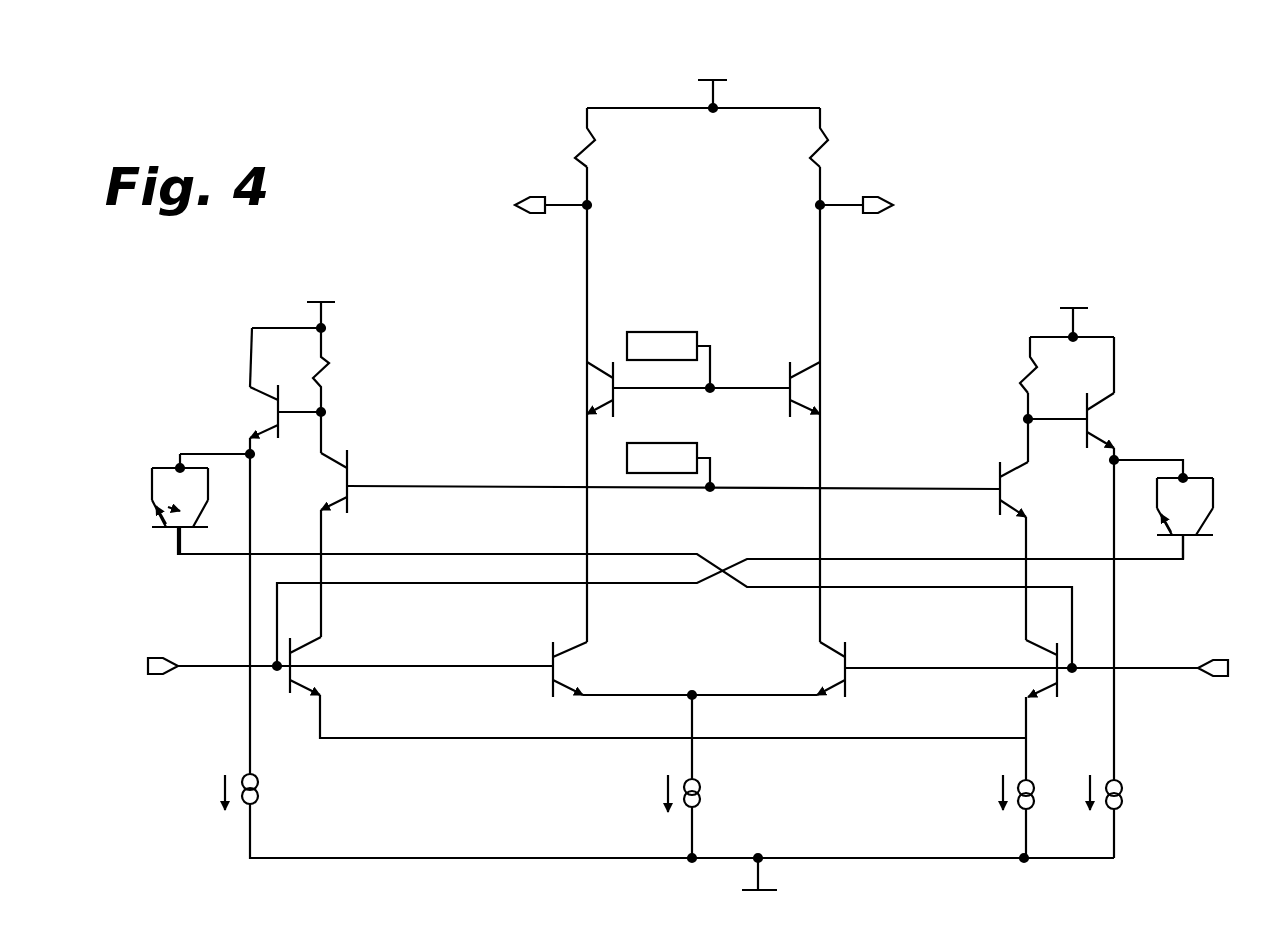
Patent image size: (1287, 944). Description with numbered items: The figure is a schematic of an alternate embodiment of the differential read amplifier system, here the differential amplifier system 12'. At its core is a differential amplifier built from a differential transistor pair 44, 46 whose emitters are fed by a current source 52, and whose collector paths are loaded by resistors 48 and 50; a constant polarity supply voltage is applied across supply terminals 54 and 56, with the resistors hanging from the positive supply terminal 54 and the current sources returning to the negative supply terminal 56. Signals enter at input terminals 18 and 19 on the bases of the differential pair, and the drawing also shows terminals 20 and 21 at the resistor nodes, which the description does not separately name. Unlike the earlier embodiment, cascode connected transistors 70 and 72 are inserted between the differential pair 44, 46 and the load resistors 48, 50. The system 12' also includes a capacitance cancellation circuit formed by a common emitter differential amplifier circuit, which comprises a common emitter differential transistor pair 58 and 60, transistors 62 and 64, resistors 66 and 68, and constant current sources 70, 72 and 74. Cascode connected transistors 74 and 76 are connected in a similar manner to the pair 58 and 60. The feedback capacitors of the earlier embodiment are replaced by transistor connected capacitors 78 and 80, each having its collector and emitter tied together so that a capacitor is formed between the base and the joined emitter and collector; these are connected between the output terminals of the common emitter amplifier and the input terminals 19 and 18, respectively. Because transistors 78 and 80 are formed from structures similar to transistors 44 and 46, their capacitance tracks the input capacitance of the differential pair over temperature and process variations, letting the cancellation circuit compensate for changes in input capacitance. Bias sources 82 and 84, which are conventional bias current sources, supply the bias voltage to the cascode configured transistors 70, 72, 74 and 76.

The differential amplifier system 12' is at (1092, 151).
The input terminal 18 is at (205, 668).
The input terminal 19 is at (1153, 668).
The output terminal 20 is at (558, 203).
The output terminal 21 is at (845, 205).
The differential transistor pair transistor 44 is at (553, 680).
The differential transistor pair transistor 46 is at (848, 648).
The resistor 48 is at (586, 151).
The resistor 50 is at (830, 140).
The current source 52 is at (700, 783).
The supply terminal 54 is at (727, 82).
The supply terminal 56 is at (780, 888).
The common emitter differential transistor pair transistor 58 is at (323, 637).
The common emitter differential transistor pair transistor 60 is at (1026, 640).
The transistor 62 is at (256, 392).
The transistor 64 is at (1117, 395).
The resistor 66 is at (326, 375).
The resistor 68 is at (1023, 380).
The cascode connected transistor / constant current source 70 is at (583, 363).
The cascode connected transistor / constant current source 72 is at (822, 372).
The cascode connected transistor / constant current source 74 is at (350, 460).
The cascode connected transistor 76 is at (998, 512).
The transistor connected capacitor 78 is at (1214, 492).
The transistor connected capacitor 80 is at (152, 500).
The bias source 82 is at (655, 332).
The bias source 84 is at (650, 443).